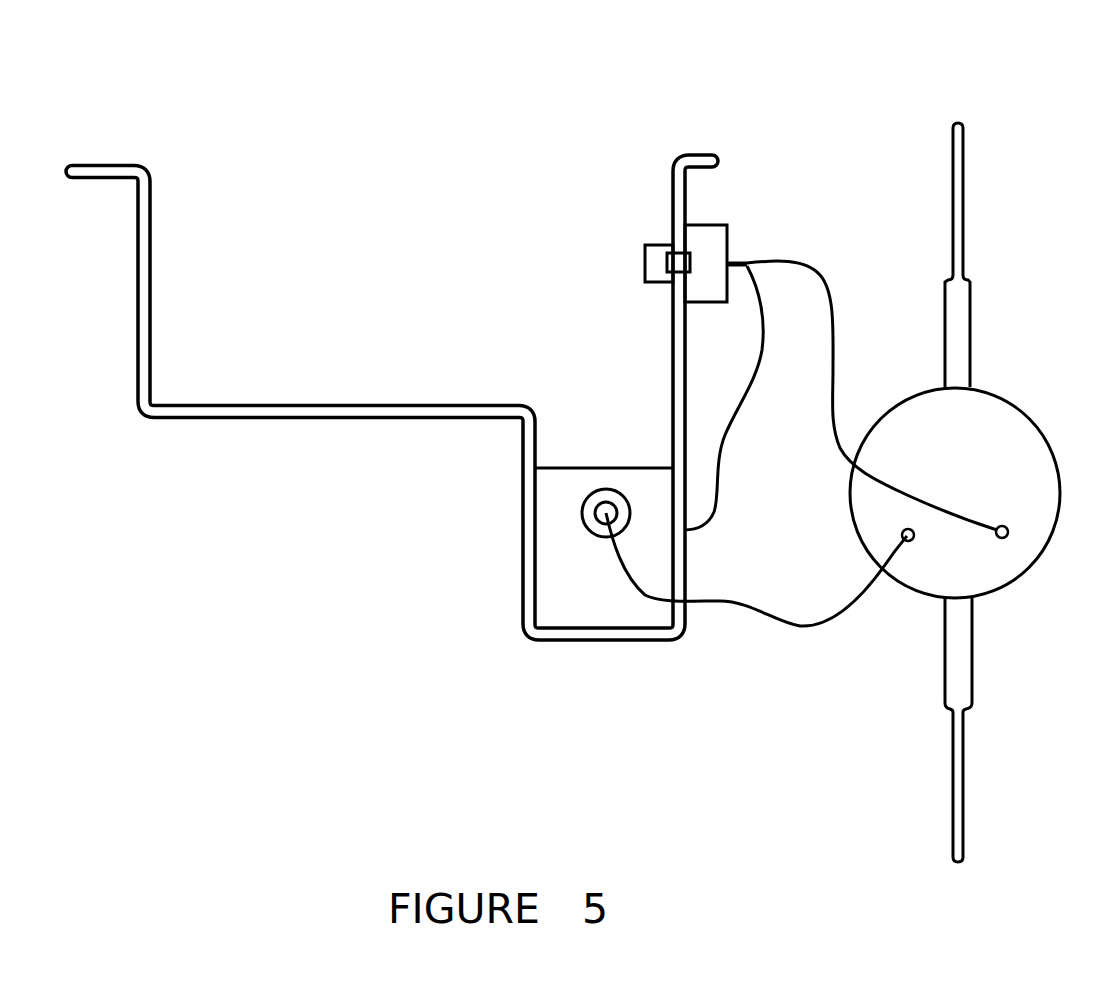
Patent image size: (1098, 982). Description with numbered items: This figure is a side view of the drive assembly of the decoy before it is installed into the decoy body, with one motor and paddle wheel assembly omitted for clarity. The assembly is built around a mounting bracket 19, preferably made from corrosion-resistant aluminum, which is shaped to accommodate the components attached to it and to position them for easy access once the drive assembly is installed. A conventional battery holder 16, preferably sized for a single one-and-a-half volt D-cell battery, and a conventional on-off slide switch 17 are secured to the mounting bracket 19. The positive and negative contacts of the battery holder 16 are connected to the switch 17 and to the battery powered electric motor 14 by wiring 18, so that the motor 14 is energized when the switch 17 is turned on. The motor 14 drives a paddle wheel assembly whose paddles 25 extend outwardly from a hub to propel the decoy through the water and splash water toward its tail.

The electric motor 14 is at (942, 474).
The battery holder 16 is at (565, 570).
The on-off switch 17 is at (703, 247).
The wiring 18 is at (783, 625).
The mounting bracket 19 is at (320, 408).
The paddle 25 is at (957, 178).